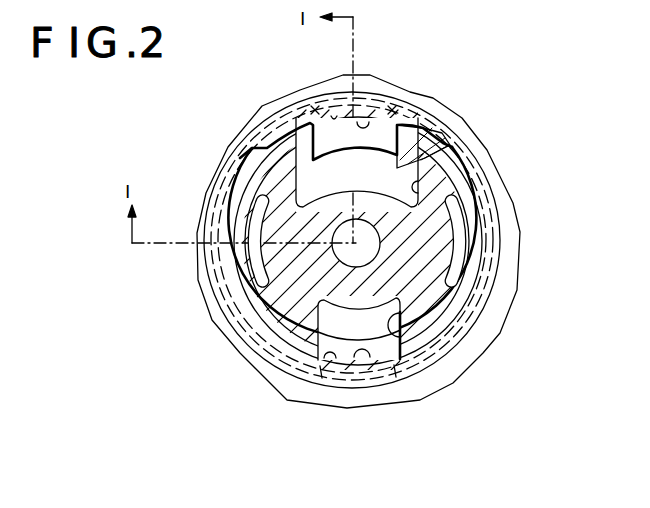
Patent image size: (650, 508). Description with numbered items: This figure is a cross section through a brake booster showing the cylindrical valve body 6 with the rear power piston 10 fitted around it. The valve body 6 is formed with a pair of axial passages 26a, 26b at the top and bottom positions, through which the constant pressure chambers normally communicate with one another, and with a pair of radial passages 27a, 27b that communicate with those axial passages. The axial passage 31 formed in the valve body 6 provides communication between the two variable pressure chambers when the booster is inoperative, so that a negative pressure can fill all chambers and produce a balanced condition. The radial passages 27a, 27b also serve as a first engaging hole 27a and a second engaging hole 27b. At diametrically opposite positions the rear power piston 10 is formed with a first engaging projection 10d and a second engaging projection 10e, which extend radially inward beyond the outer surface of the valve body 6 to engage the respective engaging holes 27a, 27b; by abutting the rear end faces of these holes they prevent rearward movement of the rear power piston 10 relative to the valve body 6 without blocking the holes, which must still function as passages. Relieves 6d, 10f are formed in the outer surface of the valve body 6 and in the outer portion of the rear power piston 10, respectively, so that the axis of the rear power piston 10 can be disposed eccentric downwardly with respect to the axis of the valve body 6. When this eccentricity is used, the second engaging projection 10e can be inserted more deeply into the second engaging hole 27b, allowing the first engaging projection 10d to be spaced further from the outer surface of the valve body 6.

The valve body 6 is at (278, 312).
The relief 6d is at (427, 140).
The rear power piston 10 is at (472, 350).
The first engaging projection 10d is at (373, 355).
The second engaging projection 10e is at (383, 120).
The relief 10f is at (440, 147).
The axial passage 26a is at (413, 337).
The axial passage 26b is at (412, 190).
The radial passage (first engaging hole) 27a is at (334, 355).
The radial passage (second engaging hole) 27b is at (322, 124).
The axial passage 31 is at (247, 218).